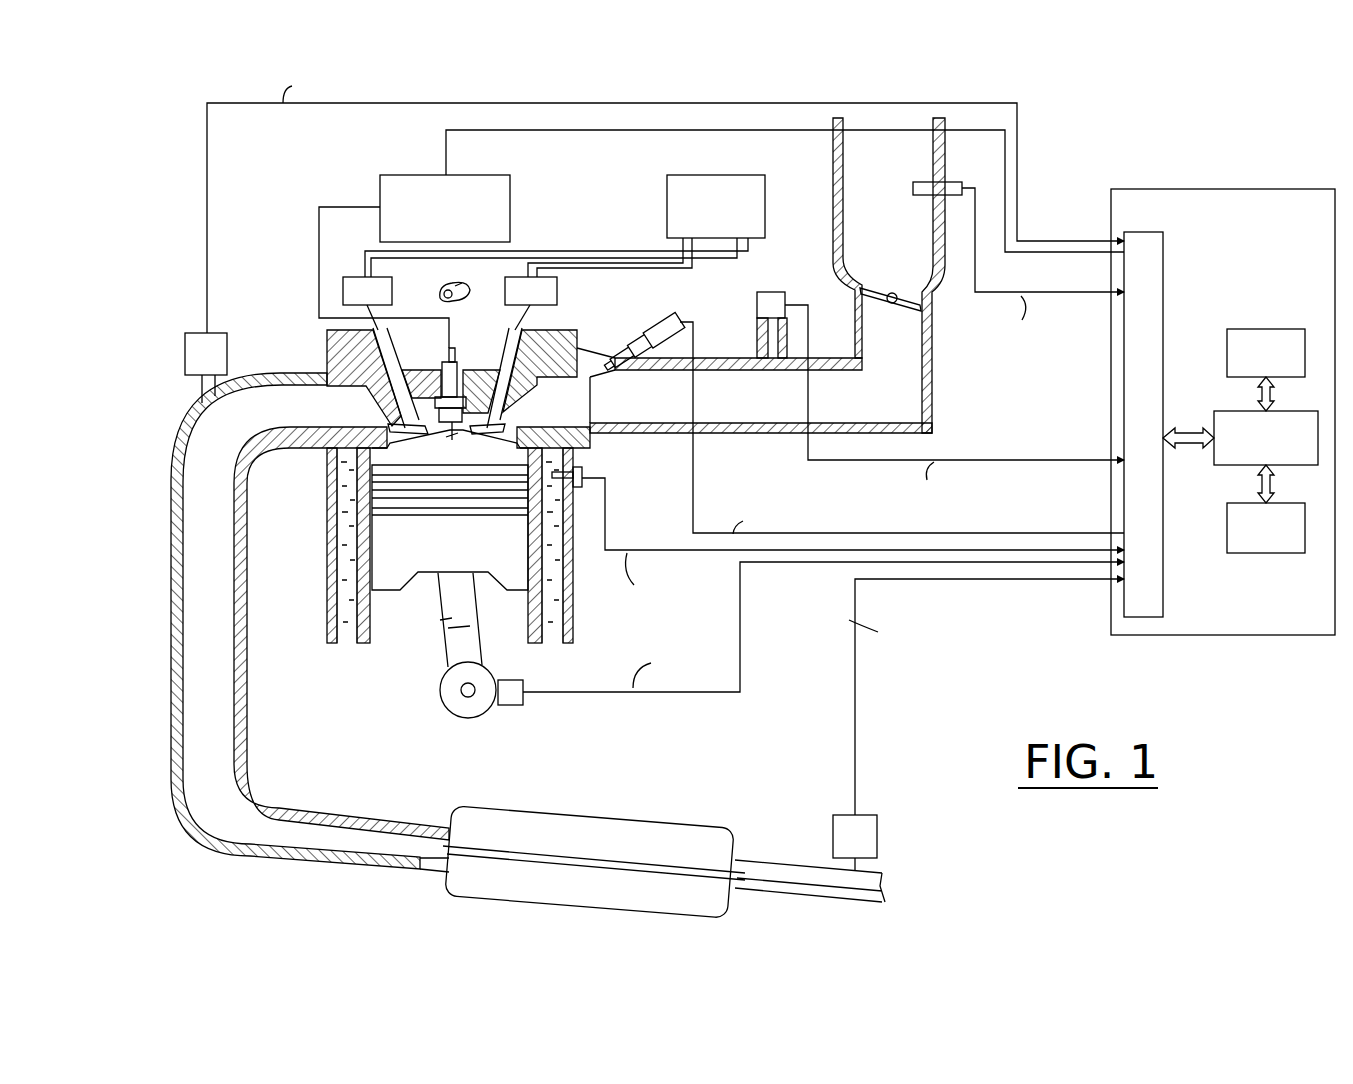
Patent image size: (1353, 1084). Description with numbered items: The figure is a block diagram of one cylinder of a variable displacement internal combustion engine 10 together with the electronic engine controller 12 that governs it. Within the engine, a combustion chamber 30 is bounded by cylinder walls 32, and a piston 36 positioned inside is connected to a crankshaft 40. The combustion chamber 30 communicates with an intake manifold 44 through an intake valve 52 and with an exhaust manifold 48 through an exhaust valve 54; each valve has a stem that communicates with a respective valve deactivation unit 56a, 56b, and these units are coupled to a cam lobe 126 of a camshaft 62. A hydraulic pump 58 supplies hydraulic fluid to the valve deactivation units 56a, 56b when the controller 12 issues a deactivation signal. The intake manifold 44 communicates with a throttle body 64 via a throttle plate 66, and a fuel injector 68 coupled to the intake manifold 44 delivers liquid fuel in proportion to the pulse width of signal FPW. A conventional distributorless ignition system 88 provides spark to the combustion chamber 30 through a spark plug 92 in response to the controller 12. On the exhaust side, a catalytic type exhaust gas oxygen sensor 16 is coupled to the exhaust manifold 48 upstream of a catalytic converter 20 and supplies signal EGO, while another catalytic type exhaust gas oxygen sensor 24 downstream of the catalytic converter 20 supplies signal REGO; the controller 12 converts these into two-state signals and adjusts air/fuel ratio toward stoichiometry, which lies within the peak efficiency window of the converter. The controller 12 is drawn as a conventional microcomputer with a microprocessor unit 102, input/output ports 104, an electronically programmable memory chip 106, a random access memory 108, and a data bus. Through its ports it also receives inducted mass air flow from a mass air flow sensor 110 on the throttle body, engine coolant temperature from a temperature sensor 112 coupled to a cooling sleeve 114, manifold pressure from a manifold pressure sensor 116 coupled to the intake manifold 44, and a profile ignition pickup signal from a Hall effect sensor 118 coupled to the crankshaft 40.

The variable displacement internal combustion engine 10 is at (296, 247).
The electronic engine controller 12 is at (1305, 248).
The catalytic type exhaust gas oxygen sensor 16 is at (220, 369).
The catalytic converter 20 is at (590, 815).
The catalytic type exhaust gas oxygen sensor 24 is at (870, 851).
The combustion chamber 30 is at (430, 453).
The cylinder walls 32 is at (377, 642).
The piston 36 is at (432, 557).
The crankshaft 40 is at (441, 704).
The intake manifold 44 is at (780, 403).
The exhaust manifold 48 is at (223, 429).
The intake valve 52 is at (512, 415).
The exhaust valve 54 is at (397, 424).
The valve deactivation unit 56a is at (598, 284).
The valve deactivation unit 56b is at (545, 284).
The hydraulic pump 58 is at (704, 178).
The camshaft 62 is at (438, 294).
The throttle body 64 is at (893, 227).
The throttle plate 66 is at (884, 286).
The fuel injector 68 is at (630, 334).
The distributorless ignition system 88 is at (507, 175).
The spark plug 92 is at (465, 357).
The microprocessor unit 102 is at (1228, 408).
The input/output ports 104 is at (1165, 246).
The electronic memory chip 106 is at (1275, 327).
The random access memory 108 is at (1274, 556).
The mass air flow sensor 110 is at (913, 180).
The temperature sensor 112 is at (585, 466).
The cooling sleeve 114 is at (555, 630).
The manifold pressure sensor 116 is at (778, 291).
The Hall effect sensor 118 is at (520, 703).
The cam lobe 126 is at (462, 283).